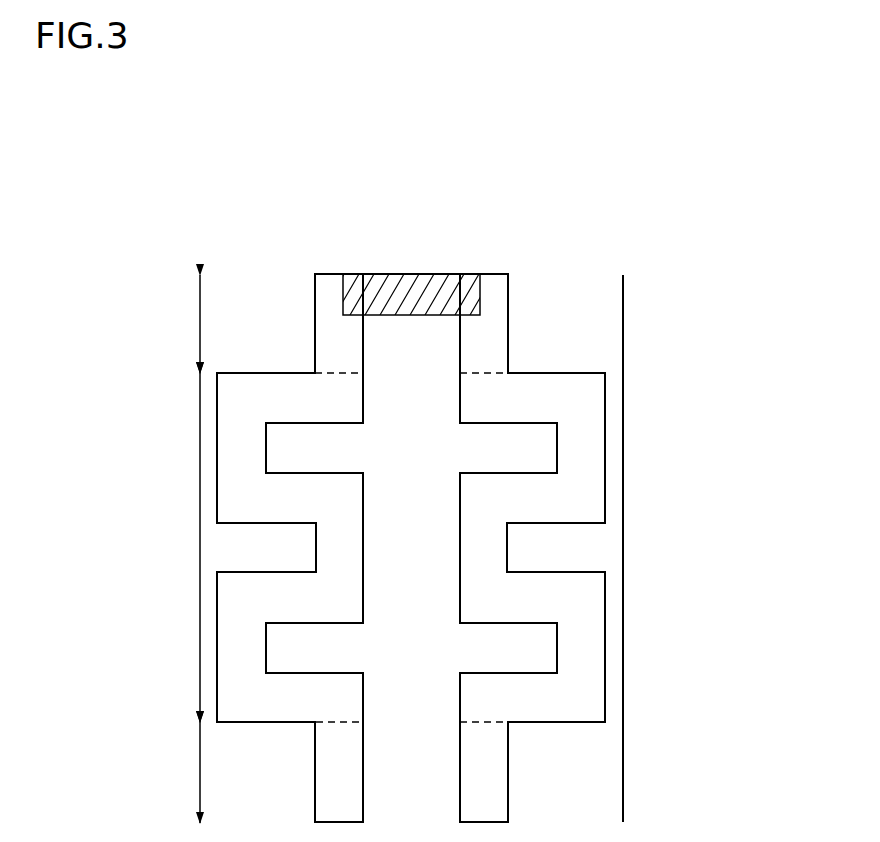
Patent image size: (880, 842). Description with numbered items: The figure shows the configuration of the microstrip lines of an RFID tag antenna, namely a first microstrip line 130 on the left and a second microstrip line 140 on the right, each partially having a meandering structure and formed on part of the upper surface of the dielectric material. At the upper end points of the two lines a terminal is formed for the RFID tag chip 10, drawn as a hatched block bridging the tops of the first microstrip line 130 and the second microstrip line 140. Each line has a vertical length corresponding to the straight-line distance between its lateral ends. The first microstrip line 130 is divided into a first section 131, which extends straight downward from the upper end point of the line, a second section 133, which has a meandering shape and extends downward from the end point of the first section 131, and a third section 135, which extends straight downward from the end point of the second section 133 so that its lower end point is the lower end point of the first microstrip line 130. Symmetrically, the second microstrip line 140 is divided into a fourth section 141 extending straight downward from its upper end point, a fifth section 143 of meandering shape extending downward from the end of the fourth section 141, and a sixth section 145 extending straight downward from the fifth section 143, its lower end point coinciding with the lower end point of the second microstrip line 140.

The RFID tag chip 10 is at (417, 274).
The first microstrip line 130 is at (338, 274).
The second microstrip line 140 is at (493, 274).
The first section 131 is at (107, 327).
The second section 133 is at (107, 552).
The third section 135 is at (107, 777).
The fourth section 141 is at (715, 322).
The fifth section 143 is at (715, 547).
The sixth section 145 is at (715, 770).